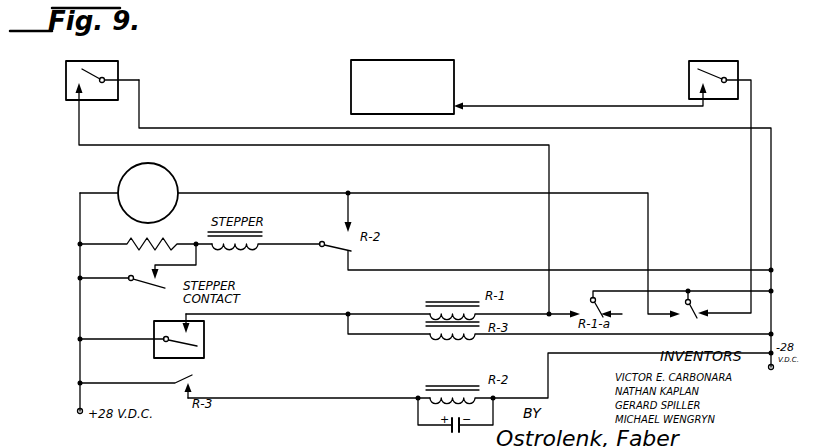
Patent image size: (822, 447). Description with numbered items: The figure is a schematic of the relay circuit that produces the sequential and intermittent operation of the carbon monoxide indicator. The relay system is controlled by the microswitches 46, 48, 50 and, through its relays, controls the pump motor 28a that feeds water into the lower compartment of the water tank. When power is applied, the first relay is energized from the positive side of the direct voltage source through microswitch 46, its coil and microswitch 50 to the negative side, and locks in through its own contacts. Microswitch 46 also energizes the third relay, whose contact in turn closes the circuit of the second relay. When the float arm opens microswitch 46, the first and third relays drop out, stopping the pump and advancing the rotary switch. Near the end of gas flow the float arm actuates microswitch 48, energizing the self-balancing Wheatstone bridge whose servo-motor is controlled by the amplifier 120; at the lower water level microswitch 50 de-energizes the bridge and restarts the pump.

The microswitch 50 is at (119, 71).
The amplifier 120 is at (455, 73).
The microswitch 48 is at (688, 72).
The pump motor 28a is at (170, 172).
The microswitch 46 is at (204, 358).